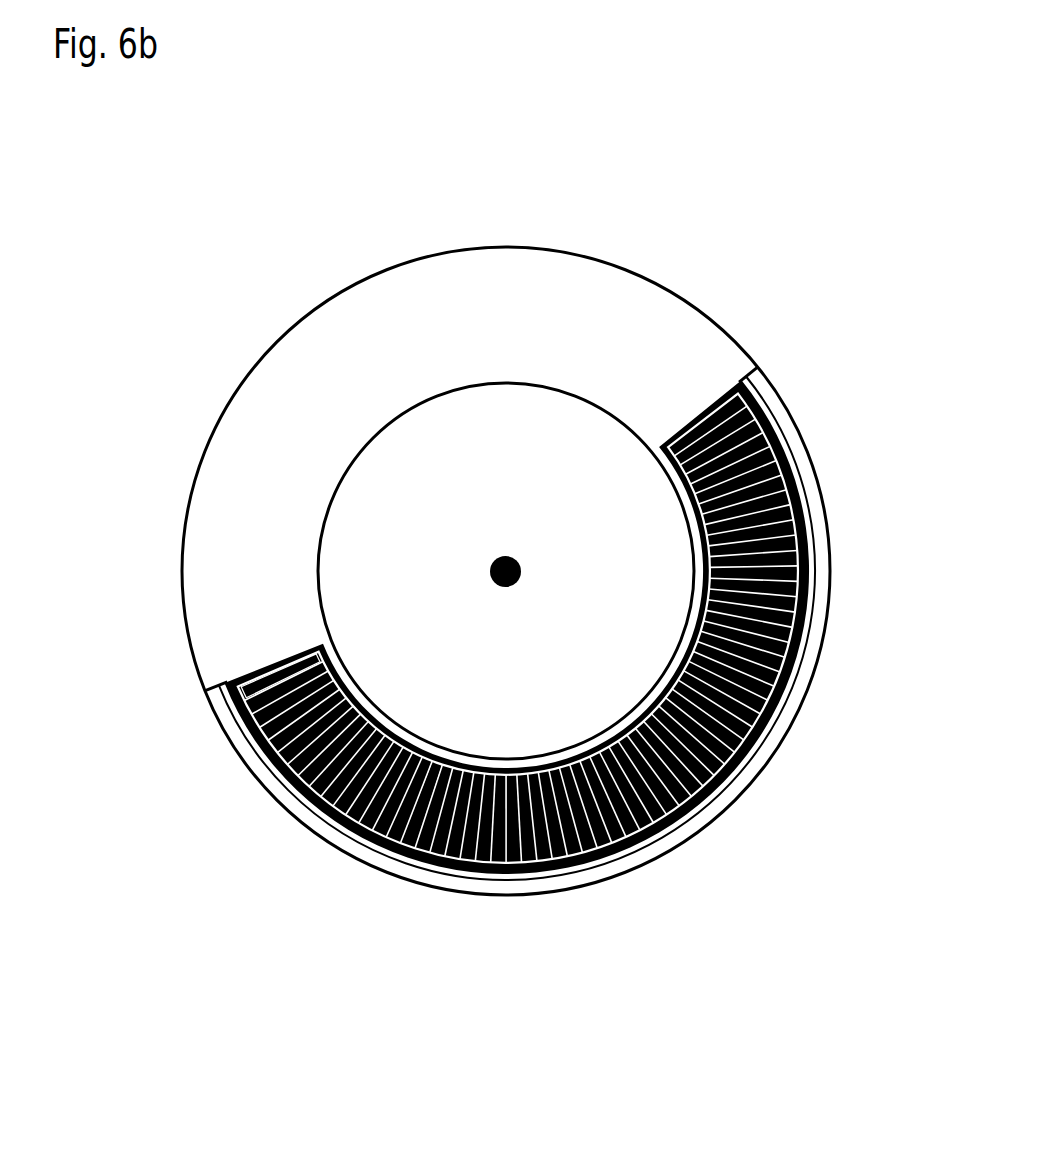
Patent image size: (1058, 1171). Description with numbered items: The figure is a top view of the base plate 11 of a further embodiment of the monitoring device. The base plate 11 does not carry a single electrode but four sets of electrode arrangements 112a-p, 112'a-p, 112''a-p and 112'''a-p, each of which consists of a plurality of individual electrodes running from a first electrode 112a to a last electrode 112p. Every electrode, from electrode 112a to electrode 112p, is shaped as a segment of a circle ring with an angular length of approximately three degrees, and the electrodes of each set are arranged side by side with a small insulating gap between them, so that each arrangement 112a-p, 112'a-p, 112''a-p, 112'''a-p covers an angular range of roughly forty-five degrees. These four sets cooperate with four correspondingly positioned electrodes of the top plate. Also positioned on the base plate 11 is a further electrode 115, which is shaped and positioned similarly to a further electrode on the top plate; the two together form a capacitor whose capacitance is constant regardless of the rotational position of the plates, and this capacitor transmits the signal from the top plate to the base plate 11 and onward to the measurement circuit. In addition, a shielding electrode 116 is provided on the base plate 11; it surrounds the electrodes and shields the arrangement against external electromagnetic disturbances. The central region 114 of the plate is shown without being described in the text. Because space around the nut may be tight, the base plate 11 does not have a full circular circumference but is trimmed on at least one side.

The base plate 11 is at (638, 194).
The central opening 114 is at (468, 400).
The shielding electrode 116 is at (130, 623).
The further electrode 115 is at (217, 727).
The electrode 112a is at (230, 685).
The electrode 112p is at (350, 847).
The electrode arrangement 112a-p is at (380, 908).
The electrode arrangement 112'a-p is at (544, 875).
The electrode arrangement 112''a-p is at (758, 750).
The electrode arrangement 112'''a-p is at (818, 503).